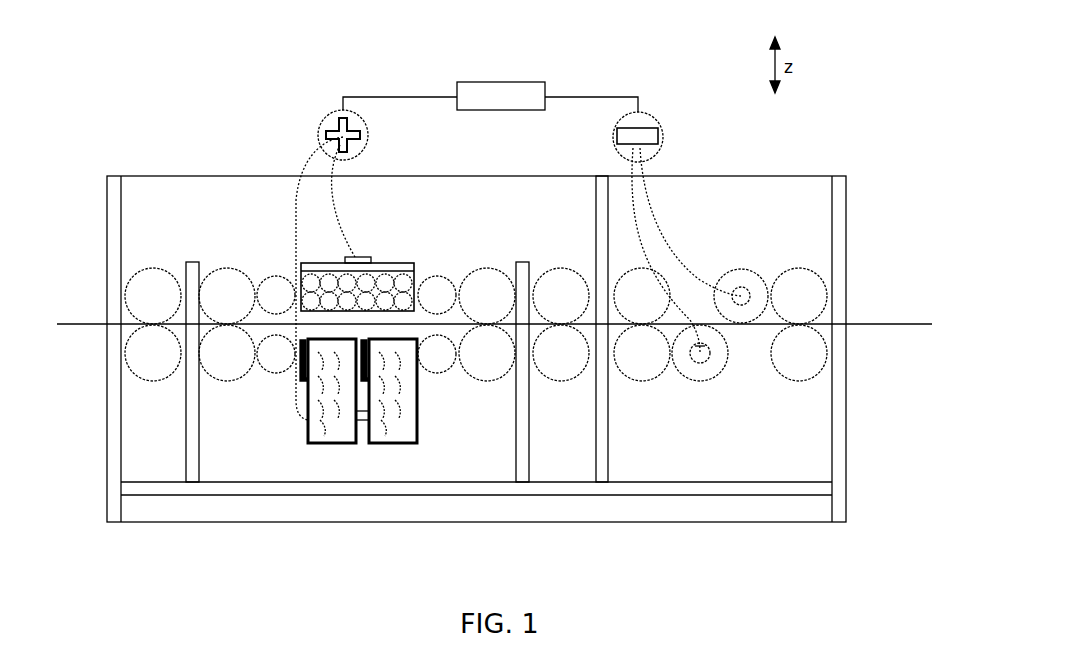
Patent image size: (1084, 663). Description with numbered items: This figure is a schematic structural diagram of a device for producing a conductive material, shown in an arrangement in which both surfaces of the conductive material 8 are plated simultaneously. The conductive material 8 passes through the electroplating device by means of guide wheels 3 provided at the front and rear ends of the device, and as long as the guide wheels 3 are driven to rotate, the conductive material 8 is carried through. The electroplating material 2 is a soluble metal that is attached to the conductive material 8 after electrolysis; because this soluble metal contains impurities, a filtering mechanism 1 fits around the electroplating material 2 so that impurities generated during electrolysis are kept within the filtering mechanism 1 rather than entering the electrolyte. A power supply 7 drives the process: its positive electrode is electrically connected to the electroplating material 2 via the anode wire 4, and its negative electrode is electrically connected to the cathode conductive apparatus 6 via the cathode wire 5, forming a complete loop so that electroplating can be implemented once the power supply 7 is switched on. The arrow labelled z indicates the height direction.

The filtering mechanism 1 is at (390, 263).
The electroplating material 2 is at (308, 422).
The guide wheels 3 is at (227, 270).
The anode wire 4 is at (296, 210).
The cathode wire 5 is at (667, 237).
The cathode conductive apparatus 6 is at (700, 375).
The power supply 7 is at (492, 97).
The conductive material 8 is at (872, 326).